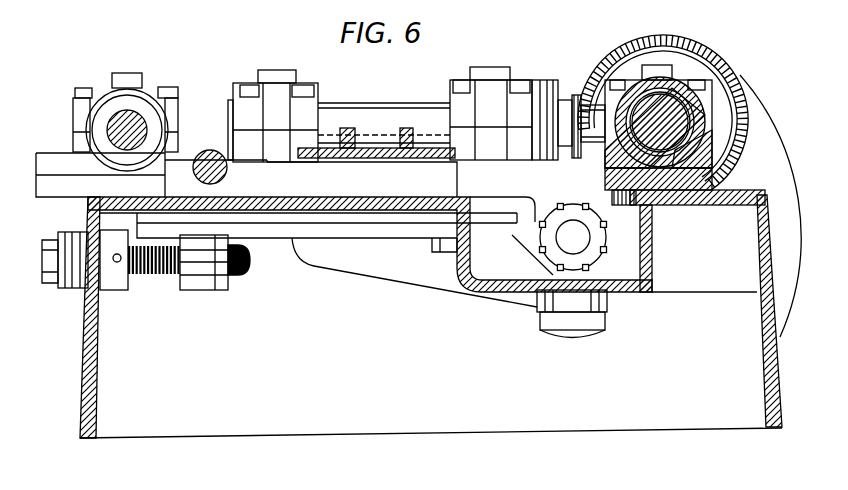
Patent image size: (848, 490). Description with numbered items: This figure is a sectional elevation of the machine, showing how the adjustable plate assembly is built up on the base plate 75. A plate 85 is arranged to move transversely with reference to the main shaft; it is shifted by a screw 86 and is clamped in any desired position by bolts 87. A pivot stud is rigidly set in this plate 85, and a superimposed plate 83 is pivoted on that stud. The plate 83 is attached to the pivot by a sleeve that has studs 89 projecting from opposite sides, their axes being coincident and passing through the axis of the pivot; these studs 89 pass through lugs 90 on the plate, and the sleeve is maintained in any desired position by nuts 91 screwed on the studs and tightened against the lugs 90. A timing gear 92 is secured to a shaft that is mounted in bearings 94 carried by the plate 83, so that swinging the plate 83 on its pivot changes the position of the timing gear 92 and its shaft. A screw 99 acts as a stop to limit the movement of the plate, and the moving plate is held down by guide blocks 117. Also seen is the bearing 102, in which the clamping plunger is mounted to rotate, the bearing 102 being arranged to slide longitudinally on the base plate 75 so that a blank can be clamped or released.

The base plate 75 is at (340, 208).
The superimposed plate 83 is at (372, 168).
The plate 85 is at (275, 228).
The screw 86 is at (155, 272).
The bolts 87 is at (222, 285).
The studs 89 is at (569, 222).
The lugs 90 is at (540, 215).
The nuts 91 is at (593, 239).
The timing gear 92 is at (573, 95).
The bearings 94 is at (277, 95).
The screw 99 is at (213, 150).
The bearing 102 is at (772, 196).
The guide blocks 117 is at (440, 158).